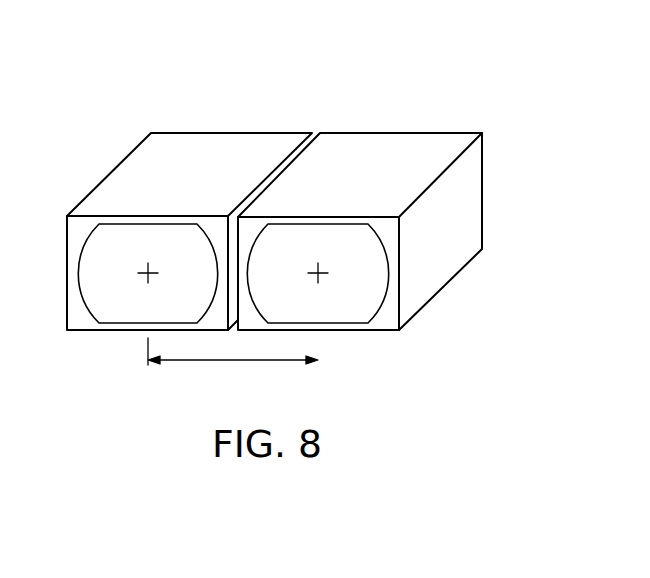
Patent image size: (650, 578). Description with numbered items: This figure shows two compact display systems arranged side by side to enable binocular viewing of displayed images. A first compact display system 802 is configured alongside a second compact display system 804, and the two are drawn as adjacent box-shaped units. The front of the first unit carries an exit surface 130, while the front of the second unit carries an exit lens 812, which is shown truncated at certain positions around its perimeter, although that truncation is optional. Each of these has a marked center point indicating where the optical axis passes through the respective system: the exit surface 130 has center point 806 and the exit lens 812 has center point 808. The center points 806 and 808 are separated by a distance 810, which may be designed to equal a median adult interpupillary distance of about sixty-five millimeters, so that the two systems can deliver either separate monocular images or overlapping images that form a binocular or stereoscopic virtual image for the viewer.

The compact display system 802 is at (106, 177).
The compact display system 804 is at (465, 133).
The exit surface 130 is at (171, 235).
The exit lens 812 is at (336, 235).
The center point 806 is at (141, 282).
The center point 808 is at (317, 280).
The distance 810 is at (232, 361).